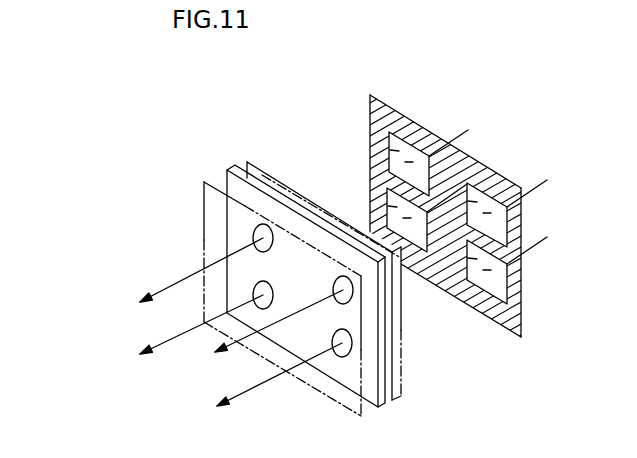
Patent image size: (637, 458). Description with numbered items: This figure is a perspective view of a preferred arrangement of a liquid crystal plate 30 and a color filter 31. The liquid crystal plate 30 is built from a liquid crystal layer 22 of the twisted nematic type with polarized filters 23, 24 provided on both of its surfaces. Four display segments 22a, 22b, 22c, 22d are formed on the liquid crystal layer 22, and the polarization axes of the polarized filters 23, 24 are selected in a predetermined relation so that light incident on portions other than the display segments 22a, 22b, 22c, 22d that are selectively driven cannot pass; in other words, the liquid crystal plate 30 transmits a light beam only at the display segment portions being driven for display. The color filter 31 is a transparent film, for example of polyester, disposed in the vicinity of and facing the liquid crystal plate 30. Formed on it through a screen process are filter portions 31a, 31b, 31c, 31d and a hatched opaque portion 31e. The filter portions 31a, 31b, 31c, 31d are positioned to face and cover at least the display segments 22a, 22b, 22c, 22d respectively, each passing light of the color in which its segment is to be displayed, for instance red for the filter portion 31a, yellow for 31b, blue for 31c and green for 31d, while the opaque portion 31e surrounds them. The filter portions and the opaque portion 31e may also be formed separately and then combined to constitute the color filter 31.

The liquid crystal plate 30 is at (298, 294).
The liquid crystal layer 22 is at (298, 299).
The display segment 22a is at (262, 238).
The display segment 22b is at (262, 295).
The display segment 22c is at (343, 290).
The display segment 22d is at (342, 343).
The polarized filter 23 is at (404, 359).
The polarized filter 24 is at (311, 390).
The color filter 31 is at (448, 230).
The filter portion 31a is at (389, 134).
The filter portion 31b is at (387, 206).
The filter portion 31c is at (497, 221).
The filter portion 31d is at (493, 297).
The opaque portion 31e is at (515, 318).